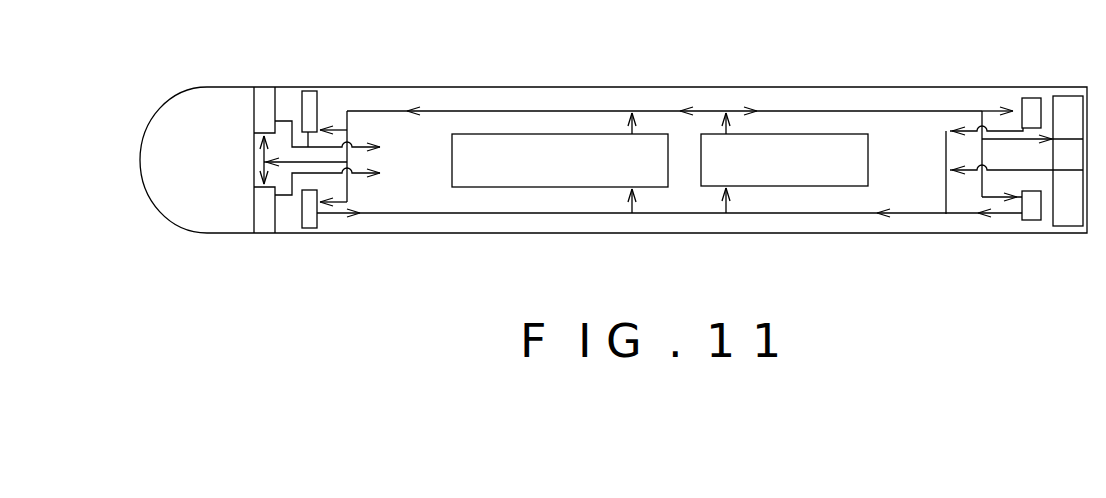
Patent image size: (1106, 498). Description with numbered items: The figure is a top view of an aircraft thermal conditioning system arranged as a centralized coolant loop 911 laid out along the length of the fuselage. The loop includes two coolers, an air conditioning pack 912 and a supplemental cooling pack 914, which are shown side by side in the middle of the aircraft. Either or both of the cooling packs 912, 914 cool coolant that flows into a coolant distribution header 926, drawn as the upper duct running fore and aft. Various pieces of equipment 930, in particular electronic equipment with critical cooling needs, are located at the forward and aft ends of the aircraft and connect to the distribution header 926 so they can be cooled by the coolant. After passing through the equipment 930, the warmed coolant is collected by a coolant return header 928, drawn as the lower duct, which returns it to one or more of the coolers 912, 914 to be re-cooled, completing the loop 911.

The centralized coolant loop 911 is at (277, 262).
The air conditioning pack 912 is at (505, 188).
The supplemental cooling pack 914 is at (868, 170).
The coolant distribution header 926 is at (448, 110).
The coolant return header 928 is at (428, 215).
The equipment 930 is at (289, 76).